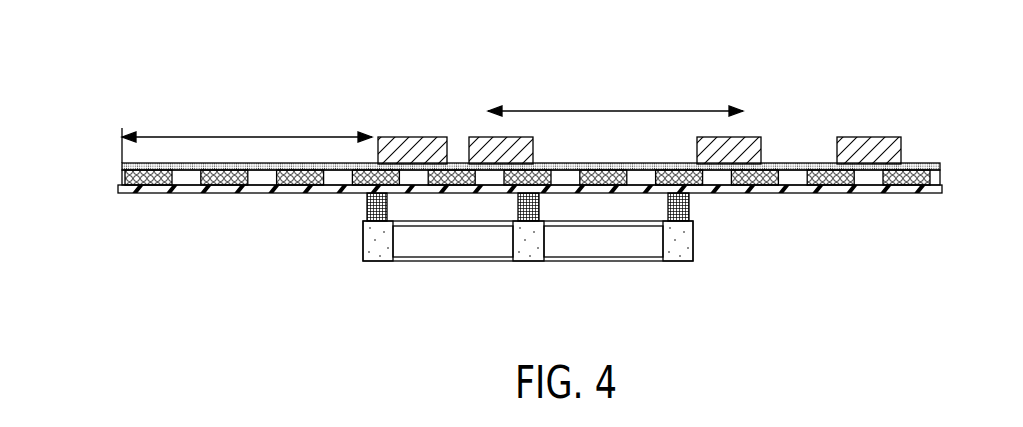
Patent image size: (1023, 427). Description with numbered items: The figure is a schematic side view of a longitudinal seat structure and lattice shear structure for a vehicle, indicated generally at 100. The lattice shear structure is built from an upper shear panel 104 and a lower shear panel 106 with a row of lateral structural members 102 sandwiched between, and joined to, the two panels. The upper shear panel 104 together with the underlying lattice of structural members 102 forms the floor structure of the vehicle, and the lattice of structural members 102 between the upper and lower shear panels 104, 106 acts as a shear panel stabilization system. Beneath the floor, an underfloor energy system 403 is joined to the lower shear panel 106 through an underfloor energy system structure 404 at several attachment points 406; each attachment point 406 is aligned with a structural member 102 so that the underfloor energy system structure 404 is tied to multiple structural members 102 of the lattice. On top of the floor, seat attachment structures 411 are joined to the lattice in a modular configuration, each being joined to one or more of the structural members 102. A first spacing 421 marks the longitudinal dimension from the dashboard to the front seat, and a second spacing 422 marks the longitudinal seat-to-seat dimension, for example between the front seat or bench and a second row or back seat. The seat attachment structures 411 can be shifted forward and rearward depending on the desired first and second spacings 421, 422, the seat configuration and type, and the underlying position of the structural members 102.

The electronic device assembly 100 is at (558, 177).
The lateral structural members 102 is at (153, 177).
The upper shear panel 104 is at (940, 167).
The lower shear panel 106 is at (862, 192).
The underfloor energy system 403 is at (447, 256).
The underfloor energy system structure 404 is at (366, 239).
The attachment points 406 is at (367, 210).
The seat attachment structures 411 is at (493, 138).
The first spacing 421 is at (270, 135).
The second spacing 422 is at (615, 111).